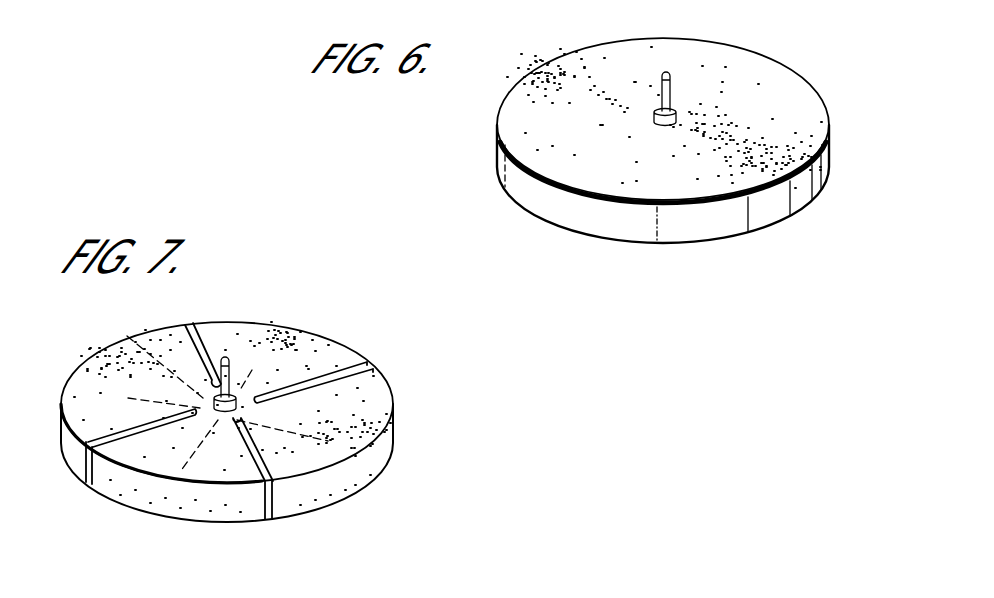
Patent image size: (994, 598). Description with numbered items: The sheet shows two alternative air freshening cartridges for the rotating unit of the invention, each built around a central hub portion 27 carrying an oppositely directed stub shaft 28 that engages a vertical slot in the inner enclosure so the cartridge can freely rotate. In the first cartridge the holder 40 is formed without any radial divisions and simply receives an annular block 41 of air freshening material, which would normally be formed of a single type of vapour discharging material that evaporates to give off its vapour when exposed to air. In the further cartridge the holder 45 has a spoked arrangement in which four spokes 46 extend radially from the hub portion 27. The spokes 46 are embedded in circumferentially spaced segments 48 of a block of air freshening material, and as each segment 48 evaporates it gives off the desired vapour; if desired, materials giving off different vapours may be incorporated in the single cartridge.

In FIG. 6, the hub portion 27 is at (675, 111).
In FIG. 7, the hub portion 27 is at (240, 402).
In FIG. 6, the stub shaft 28 is at (675, 80).
In FIG. 7, the stub shaft 28 is at (250, 354).
In FIG. 6, the holder 40 is at (643, 233).
In FIG. 6, the annular block 41 is at (512, 118).
In FIG. 7, the holder 45 is at (133, 337).
In FIG. 7, the spoke 46 is at (86, 357).
In FIG. 7, the segment 48 is at (288, 498).